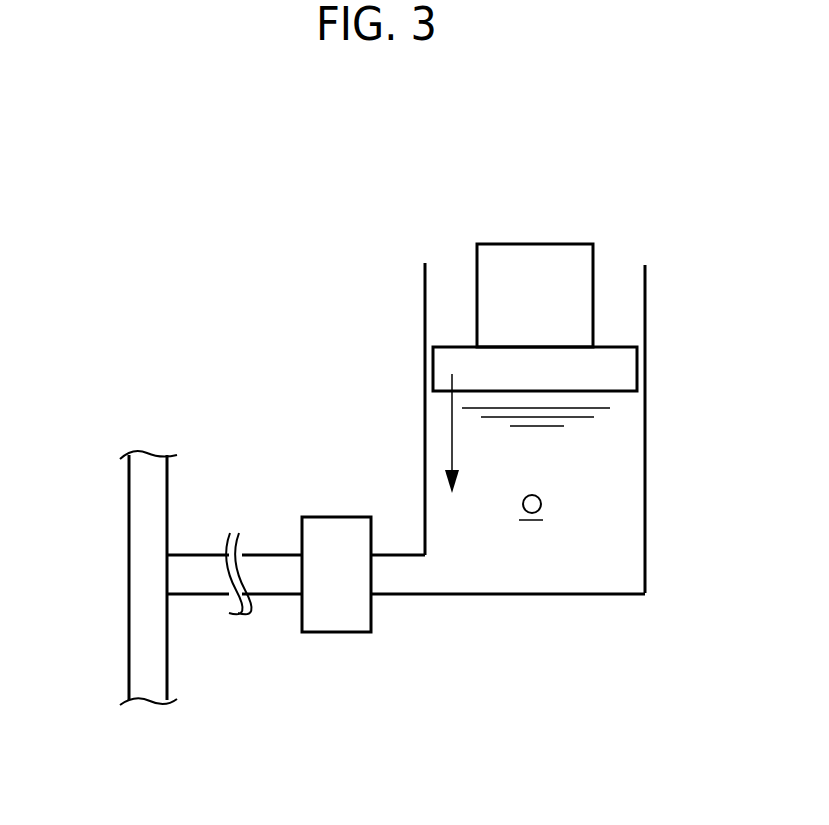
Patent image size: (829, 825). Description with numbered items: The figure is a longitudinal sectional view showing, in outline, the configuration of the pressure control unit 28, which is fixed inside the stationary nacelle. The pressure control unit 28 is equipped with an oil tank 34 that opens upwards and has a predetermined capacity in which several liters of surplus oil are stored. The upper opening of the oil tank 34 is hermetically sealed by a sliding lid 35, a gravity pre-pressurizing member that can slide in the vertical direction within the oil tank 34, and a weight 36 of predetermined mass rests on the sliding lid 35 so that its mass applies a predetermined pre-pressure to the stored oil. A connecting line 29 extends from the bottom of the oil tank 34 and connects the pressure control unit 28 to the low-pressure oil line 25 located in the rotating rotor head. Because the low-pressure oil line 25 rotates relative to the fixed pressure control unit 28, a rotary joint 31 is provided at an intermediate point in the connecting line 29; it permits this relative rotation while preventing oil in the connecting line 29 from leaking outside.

The pressure control unit 28 is at (238, 208).
The low-pressure oil line 25 is at (129, 484).
The connecting line 29 is at (266, 553).
The rotary joint 31 is at (338, 517).
The oil tank 34 is at (645, 492).
The sliding lid 35 is at (612, 369).
The weight 36 is at (593, 258).